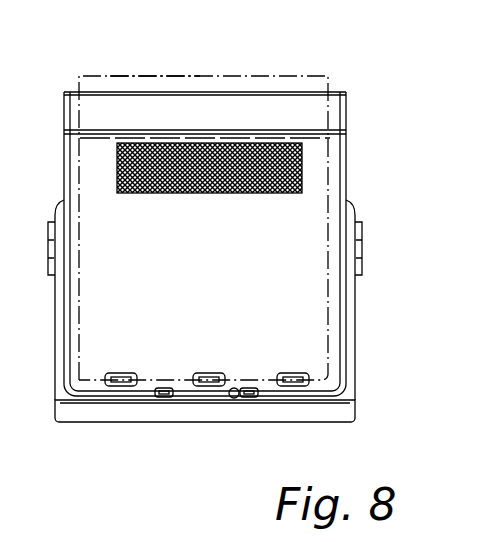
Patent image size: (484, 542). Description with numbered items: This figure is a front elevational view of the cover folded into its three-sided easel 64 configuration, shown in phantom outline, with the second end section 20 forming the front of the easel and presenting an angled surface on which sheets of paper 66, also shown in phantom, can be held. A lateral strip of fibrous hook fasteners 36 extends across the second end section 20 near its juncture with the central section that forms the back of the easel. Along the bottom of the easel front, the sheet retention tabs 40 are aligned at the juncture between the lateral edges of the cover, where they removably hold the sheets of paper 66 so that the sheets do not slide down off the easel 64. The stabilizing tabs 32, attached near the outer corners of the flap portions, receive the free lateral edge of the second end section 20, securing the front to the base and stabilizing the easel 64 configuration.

The second end section 20 is at (337, 187).
The stabilizing tabs 32 is at (165, 398).
The lateral strip of fibrous hook fasteners 36 is at (243, 193).
The sheet retention tabs 40 is at (210, 373).
The three-sided easel 64 is at (360, 85).
The sheets of paper 66 is at (134, 76).